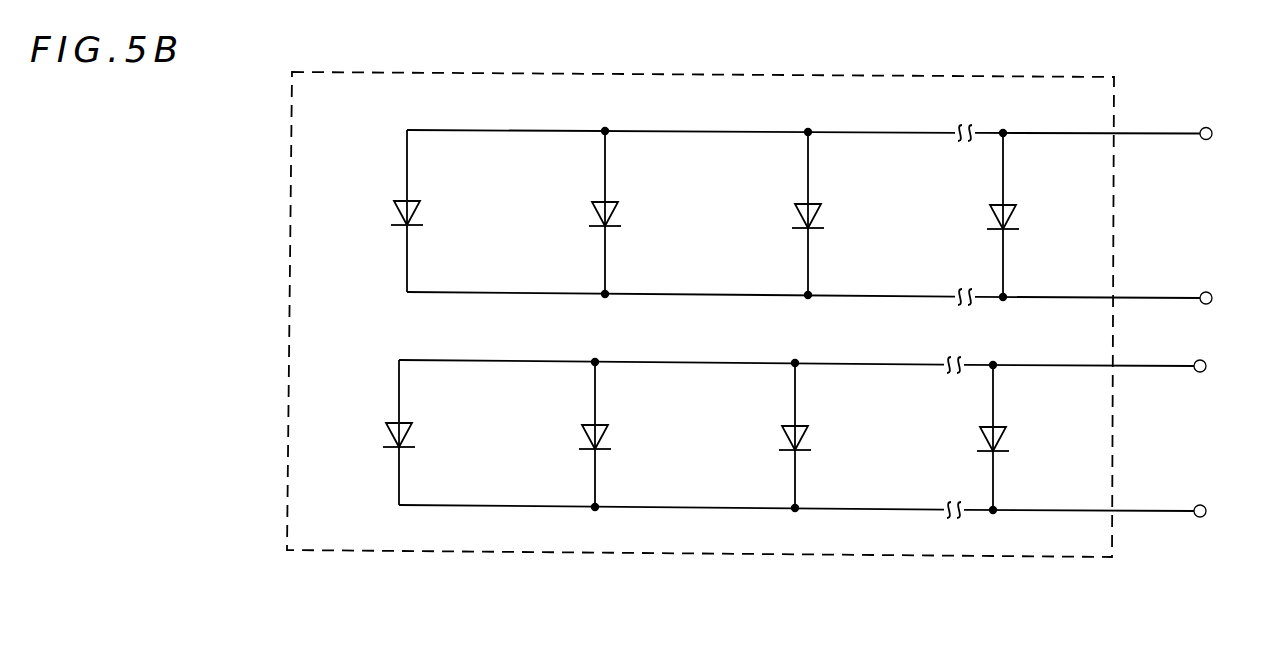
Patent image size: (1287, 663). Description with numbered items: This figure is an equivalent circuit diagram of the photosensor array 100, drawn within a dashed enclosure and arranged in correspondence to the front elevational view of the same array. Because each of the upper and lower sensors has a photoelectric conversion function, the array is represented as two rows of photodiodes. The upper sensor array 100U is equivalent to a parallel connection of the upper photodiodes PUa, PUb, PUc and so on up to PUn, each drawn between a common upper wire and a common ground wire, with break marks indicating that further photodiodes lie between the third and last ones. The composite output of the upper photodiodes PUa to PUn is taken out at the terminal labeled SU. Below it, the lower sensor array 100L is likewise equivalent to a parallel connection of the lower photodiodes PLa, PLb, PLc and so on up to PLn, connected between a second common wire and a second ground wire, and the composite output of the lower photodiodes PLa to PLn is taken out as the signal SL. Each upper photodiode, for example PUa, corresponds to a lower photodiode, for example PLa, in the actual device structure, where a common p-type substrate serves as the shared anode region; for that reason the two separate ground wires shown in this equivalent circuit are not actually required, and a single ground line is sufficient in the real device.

The photosensor array 100 is at (985, 77).
The upper sensor array 100U is at (730, 208).
The lower sensor array 100L is at (727, 439).
The upper photodiode PUa is at (438, 196).
The upper photodiode PUb is at (638, 196).
The upper photodiode PUc is at (839, 197).
The upper photodiode PUn is at (1034, 198).
The lower photodiode PLa is at (427, 420).
The lower photodiode PLb is at (622, 421).
The lower photodiode PLc is at (822, 421).
The lower photodiode PLn is at (1025, 422).